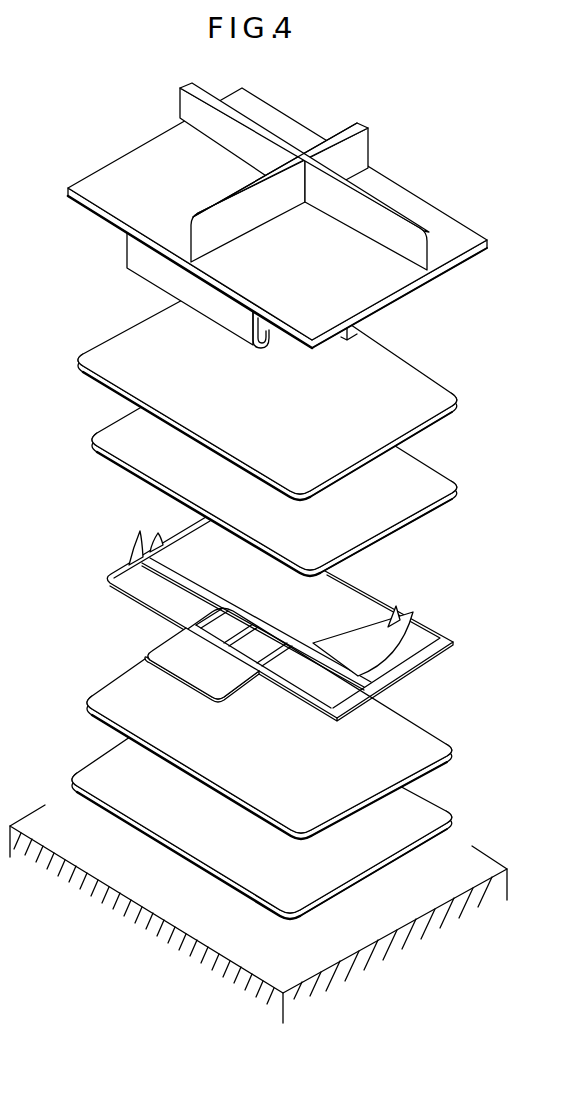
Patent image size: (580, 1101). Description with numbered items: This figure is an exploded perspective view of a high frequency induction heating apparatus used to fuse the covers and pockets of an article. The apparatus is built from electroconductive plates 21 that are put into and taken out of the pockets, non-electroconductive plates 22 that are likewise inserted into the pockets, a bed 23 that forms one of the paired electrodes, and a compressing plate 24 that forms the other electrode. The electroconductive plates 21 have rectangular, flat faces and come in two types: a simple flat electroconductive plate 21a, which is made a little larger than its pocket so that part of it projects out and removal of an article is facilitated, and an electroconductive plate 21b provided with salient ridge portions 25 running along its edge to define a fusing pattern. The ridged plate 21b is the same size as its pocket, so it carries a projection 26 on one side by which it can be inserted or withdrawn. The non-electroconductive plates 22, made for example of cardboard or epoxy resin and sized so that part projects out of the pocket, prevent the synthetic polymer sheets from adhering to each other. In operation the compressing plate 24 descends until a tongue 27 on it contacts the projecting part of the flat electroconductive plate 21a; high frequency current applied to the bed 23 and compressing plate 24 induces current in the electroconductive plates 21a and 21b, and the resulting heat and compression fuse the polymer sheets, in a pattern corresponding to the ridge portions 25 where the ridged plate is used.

The electroconductive plates 21 is at (113, 342).
The flat electroconductive plate 21a is at (388, 365).
The electroconductive plate with ridge portions 21b is at (417, 681).
The non-electroconductive plates 22 is at (102, 433).
The bed 23 is at (93, 858).
The compressing plate 24 is at (137, 168).
The salient ridge portions 25 is at (156, 542).
The projection 26 is at (160, 647).
The tongue 27 is at (137, 258).